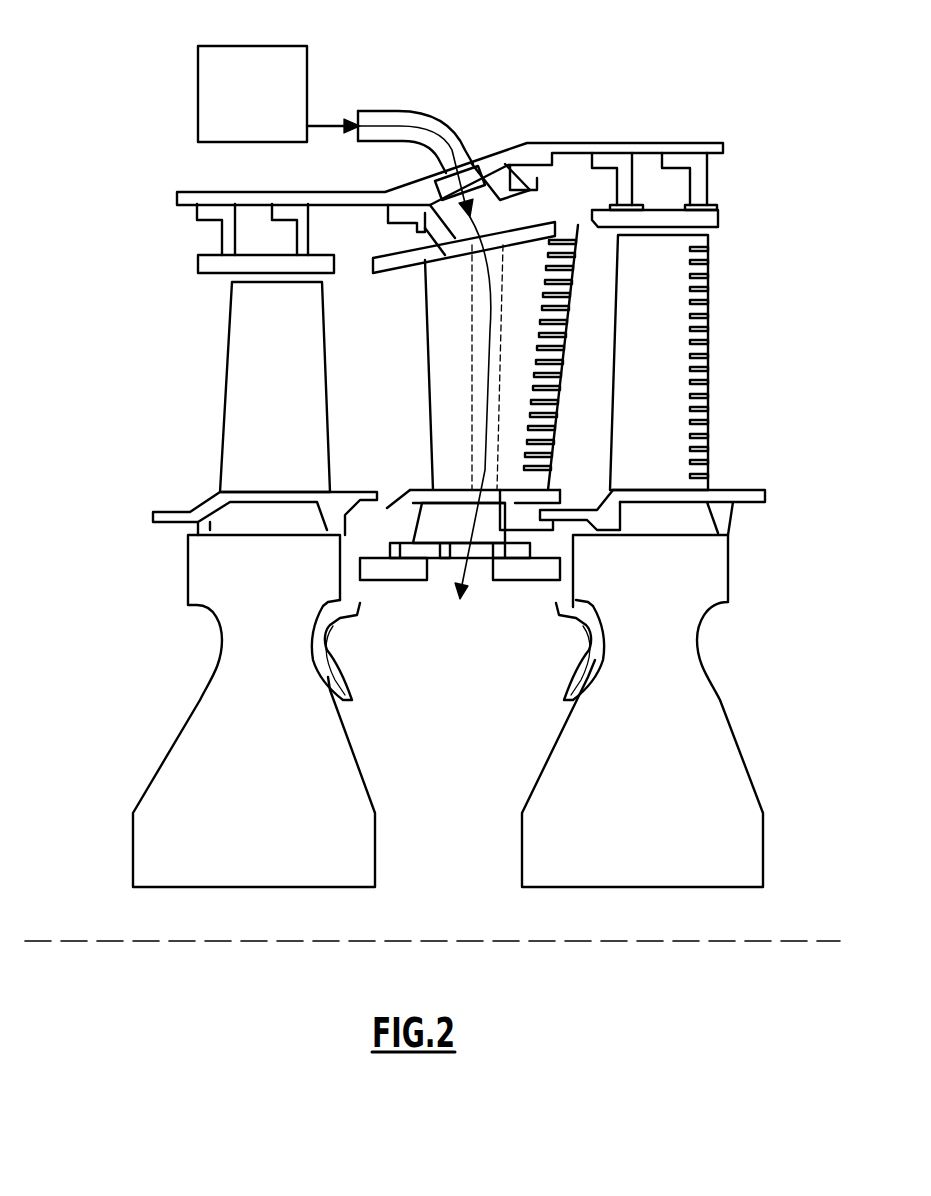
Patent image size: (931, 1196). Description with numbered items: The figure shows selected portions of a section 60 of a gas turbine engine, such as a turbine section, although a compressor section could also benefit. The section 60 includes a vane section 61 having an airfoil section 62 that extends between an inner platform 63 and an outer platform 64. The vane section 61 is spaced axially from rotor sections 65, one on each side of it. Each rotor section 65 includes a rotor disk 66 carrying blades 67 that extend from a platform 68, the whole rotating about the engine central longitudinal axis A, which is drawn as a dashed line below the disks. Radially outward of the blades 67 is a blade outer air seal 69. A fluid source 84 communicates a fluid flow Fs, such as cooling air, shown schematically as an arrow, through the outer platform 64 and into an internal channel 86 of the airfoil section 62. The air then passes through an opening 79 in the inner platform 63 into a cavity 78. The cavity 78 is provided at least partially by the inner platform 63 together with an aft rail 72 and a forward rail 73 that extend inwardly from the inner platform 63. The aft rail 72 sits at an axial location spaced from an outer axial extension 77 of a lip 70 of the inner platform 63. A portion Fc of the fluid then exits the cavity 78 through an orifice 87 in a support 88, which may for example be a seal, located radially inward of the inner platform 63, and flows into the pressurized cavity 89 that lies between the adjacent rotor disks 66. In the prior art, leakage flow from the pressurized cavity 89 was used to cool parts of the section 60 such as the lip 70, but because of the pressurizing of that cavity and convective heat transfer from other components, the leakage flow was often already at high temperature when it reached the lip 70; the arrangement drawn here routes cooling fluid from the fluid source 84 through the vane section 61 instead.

The section 60 is at (164, 82).
The vane section 61 is at (398, 347).
The airfoil section 62 is at (452, 385).
The inner platform 63 is at (430, 497).
The outer platform 64 is at (467, 250).
The rotor section 65 is at (181, 377).
The rotor disk 66 is at (173, 777).
The blade 67 is at (240, 452).
The platform 68 is at (173, 515).
The blade outer air seal 69 is at (197, 263).
The lip 70 is at (563, 493).
The aft rail 72 is at (533, 535).
The forward rail 73 is at (410, 532).
The outer axial extension 77 is at (572, 493).
The cavity 78 is at (465, 536).
The opening 79 is at (490, 497).
The fluid source 84 is at (257, 46).
The internal channel 86 is at (507, 342).
The orifice 87 is at (448, 552).
The support 88 is at (410, 552).
The pressurized cavity 89 is at (467, 747).
The fluid flow Fs is at (381, 126).
The portion of the fluid Fc is at (470, 572).
The engine central longitudinal axis A is at (796, 941).